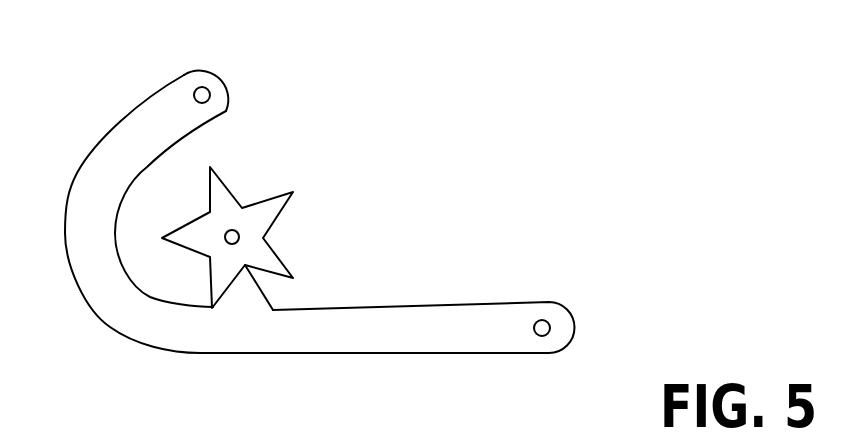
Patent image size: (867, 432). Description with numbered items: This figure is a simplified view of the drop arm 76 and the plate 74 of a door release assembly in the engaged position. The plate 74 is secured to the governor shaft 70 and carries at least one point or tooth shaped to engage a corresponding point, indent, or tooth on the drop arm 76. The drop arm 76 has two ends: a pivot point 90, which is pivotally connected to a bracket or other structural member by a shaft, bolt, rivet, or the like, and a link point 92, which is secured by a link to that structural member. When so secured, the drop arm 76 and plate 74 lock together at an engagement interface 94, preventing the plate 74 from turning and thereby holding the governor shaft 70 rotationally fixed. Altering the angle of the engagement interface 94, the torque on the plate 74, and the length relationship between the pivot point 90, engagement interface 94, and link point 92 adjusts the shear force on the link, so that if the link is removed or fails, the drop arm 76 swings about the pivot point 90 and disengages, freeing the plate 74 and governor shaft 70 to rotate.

The governor shaft 70 is at (233, 230).
The plate 74 is at (266, 238).
The drop arm 76 is at (118, 142).
The pivot point 90 is at (208, 88).
The link point 92 is at (549, 324).
The engagement interface 94 is at (235, 282).